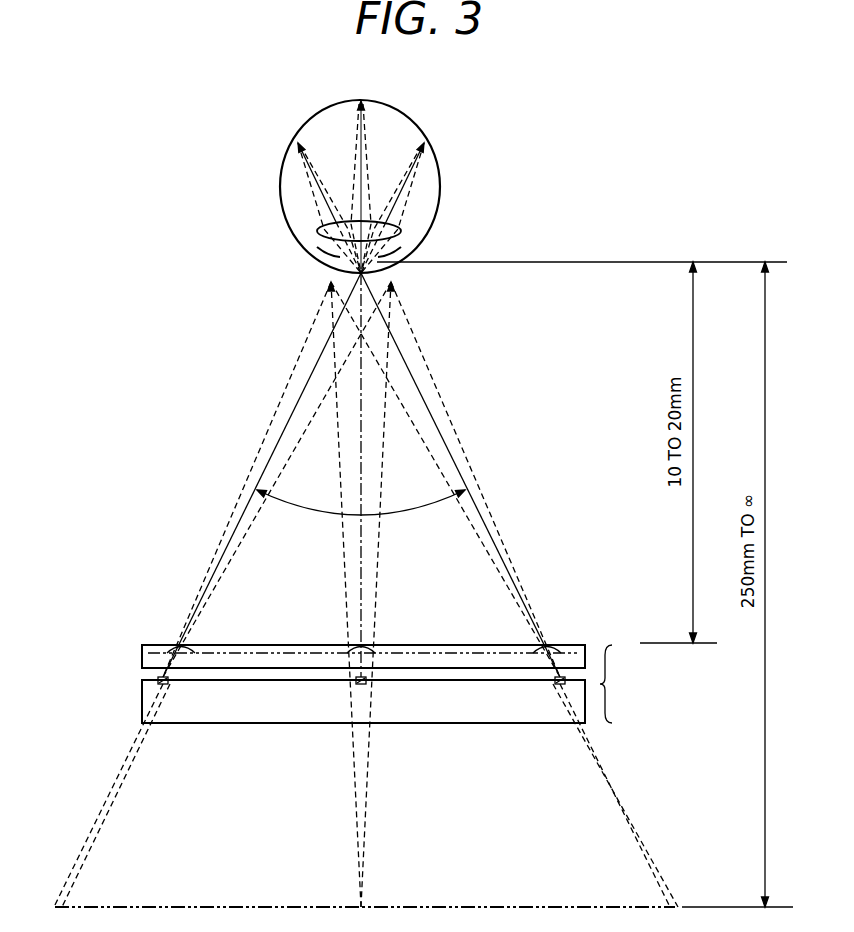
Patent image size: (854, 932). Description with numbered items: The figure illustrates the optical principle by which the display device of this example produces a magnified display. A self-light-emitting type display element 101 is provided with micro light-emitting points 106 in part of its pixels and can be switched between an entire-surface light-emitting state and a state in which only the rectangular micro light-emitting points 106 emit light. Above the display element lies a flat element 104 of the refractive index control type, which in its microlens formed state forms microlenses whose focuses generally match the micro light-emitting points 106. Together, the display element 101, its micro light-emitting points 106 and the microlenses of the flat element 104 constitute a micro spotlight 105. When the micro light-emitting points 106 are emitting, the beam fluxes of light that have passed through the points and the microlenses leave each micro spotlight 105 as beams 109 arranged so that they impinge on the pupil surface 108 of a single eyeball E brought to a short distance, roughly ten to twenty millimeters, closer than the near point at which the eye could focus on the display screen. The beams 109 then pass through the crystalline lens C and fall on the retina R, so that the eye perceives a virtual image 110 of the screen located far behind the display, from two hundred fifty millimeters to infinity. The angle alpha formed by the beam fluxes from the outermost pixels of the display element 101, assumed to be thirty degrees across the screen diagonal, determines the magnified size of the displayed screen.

The self-light-emitting type display element 101 is at (508, 716).
The flat element of the refractive index control type 104 is at (181, 644).
The micro spotlight 105 is at (397, 684).
The micro light-emitting points 106 is at (372, 688).
The pupil surface 108 is at (385, 264).
The beams 109 is at (252, 537).
The virtual image 110 is at (270, 907).
The retina R is at (410, 118).
The eyeball E is at (431, 196).
The crystalline lens C is at (318, 237).